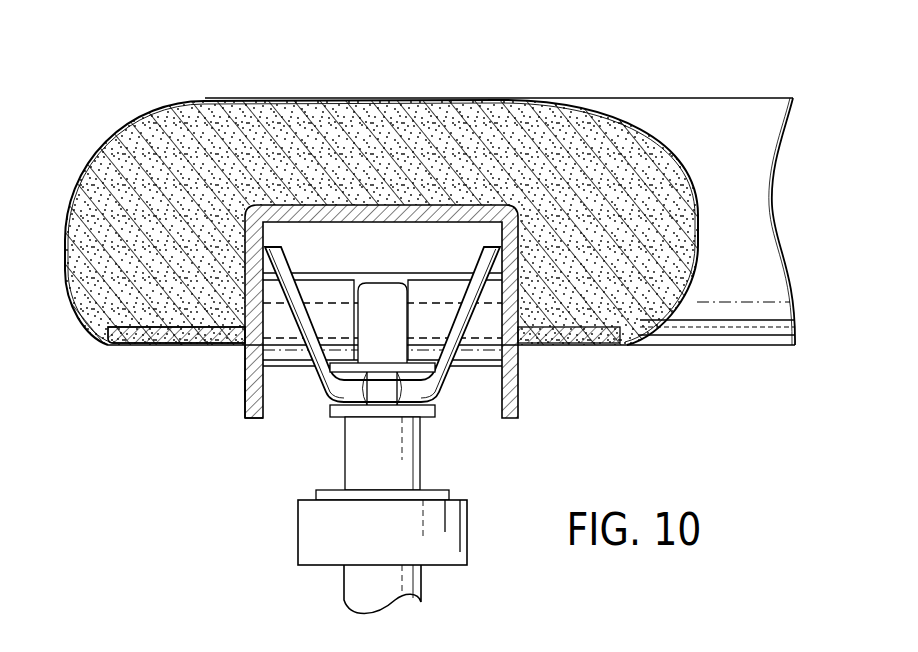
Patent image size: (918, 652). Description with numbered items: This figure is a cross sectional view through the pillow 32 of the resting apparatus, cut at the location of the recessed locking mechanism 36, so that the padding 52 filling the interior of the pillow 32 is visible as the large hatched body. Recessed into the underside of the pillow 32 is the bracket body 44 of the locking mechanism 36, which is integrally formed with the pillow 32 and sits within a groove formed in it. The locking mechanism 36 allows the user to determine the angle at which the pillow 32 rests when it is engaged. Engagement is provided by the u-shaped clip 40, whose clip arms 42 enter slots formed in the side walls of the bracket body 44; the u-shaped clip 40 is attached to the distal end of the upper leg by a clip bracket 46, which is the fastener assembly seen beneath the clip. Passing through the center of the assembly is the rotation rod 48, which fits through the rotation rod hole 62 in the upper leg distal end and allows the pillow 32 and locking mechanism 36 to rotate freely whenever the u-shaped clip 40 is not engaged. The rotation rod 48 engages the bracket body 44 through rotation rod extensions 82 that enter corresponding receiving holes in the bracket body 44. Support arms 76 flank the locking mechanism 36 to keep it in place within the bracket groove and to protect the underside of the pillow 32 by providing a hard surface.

The pillow 32 is at (687, 98).
The locking mechanism 36 is at (515, 400).
The u-shaped clip 40 is at (318, 383).
The clip arms 42 is at (282, 246).
The bracket body 44 is at (248, 417).
The clip bracket 46 is at (385, 411).
The rotation rod 48 is at (247, 393).
The padding 52 is at (137, 150).
The rotation rod hole 62 is at (378, 306).
The support arms 76 is at (113, 343).
The rotation rod extensions 82 is at (222, 337).